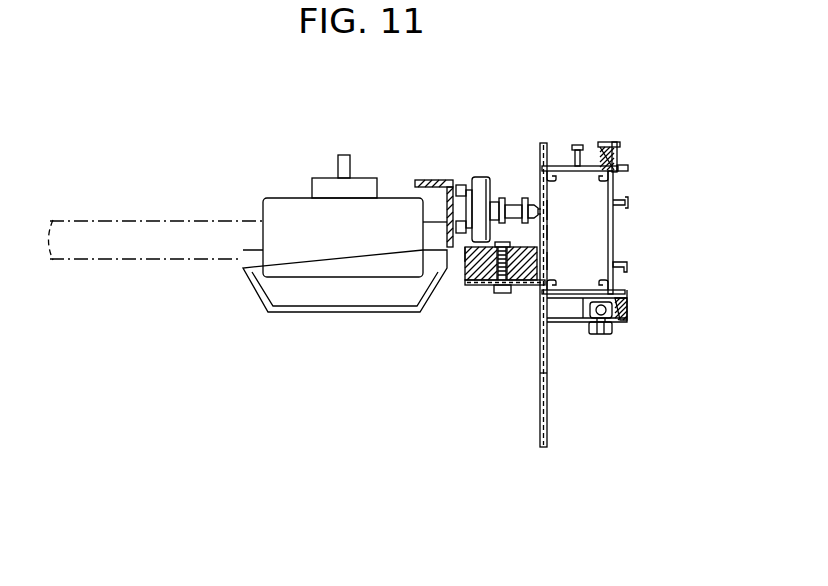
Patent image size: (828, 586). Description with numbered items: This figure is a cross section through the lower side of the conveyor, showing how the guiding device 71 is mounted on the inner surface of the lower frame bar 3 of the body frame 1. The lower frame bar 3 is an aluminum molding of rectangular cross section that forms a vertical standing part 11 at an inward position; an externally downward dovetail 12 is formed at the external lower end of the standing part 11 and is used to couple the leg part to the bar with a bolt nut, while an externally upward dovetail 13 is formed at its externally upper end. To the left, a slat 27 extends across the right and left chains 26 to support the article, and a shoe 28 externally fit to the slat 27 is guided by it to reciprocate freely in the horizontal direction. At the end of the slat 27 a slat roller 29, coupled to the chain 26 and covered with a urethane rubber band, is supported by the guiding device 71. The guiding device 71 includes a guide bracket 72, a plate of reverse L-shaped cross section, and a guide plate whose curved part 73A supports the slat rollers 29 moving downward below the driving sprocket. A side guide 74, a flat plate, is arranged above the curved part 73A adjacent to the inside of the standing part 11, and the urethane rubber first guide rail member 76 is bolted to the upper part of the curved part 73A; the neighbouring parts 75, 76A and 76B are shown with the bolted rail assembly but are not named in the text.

The body frame 1 is at (661, 291).
The lower frame bar 3 is at (613, 235).
The standing part 11 is at (548, 210).
The externally downward dovetail 12 is at (629, 312).
The externally upward dovetail 13 is at (625, 156).
The chain 26 is at (516, 205).
The slat 27 is at (146, 248).
The shoe 28 is at (299, 303).
The slat roller 29 is at (478, 178).
The guiding device 71 is at (641, 390).
The guide bracket 72 is at (548, 390).
The curved part 73A is at (480, 290).
The side guide 74 is at (548, 260).
The holding plate 75 is at (490, 288).
The first guide rail member 76 is at (512, 288).
The bolt head 76A is at (548, 232).
The nut 76B is at (466, 244).